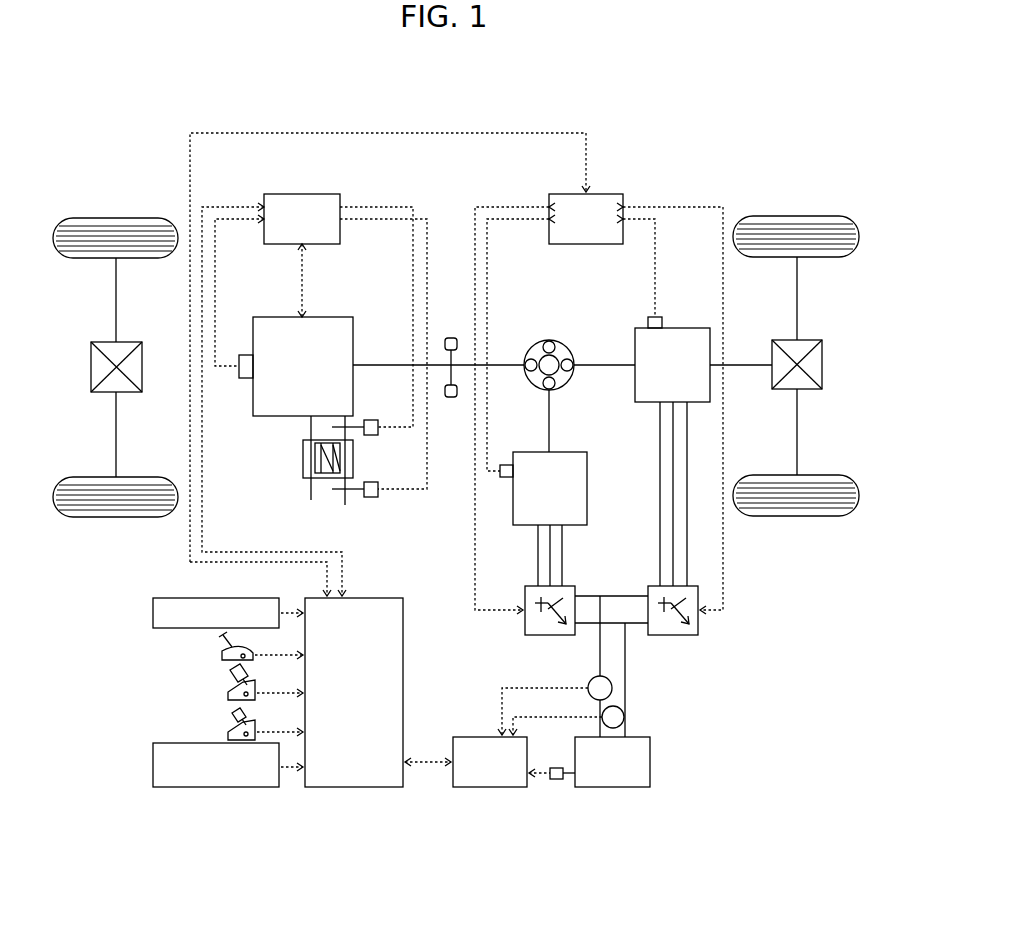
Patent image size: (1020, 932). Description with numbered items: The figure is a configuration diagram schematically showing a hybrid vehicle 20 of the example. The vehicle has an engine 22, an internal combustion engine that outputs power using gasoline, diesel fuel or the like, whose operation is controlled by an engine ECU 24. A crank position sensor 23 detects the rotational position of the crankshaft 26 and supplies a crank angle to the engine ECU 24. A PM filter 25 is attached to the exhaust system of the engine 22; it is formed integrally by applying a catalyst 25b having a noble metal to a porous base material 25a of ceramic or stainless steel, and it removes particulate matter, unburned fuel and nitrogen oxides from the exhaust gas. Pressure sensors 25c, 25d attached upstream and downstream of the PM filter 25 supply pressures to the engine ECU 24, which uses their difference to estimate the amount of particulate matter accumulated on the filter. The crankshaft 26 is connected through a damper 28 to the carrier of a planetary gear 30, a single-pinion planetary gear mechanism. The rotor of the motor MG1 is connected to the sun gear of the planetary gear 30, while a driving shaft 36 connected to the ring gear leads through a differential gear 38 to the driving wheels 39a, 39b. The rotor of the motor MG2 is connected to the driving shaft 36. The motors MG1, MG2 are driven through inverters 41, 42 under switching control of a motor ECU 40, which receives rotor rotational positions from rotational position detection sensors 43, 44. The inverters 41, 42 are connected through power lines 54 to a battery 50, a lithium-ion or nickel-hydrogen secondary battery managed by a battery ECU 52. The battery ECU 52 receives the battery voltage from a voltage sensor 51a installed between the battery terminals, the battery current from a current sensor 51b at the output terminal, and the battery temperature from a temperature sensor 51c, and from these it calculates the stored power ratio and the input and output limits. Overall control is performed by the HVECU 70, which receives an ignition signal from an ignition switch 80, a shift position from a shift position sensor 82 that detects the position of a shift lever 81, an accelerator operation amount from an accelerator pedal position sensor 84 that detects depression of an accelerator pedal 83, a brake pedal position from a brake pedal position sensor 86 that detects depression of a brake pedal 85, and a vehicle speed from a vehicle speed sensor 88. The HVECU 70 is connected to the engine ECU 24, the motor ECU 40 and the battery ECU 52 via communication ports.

The hybrid vehicle 20 is at (709, 165).
The engine 22 is at (322, 317).
The crank position sensor 23 is at (240, 355).
The engine ECU 24 is at (302, 192).
The PM filter 25 is at (295, 460).
The porous base material 25a is at (310, 458).
The catalyst 25b is at (313, 470).
The pressure sensor 25c is at (369, 420).
The pressure sensor 25d is at (372, 500).
The crankshaft 26 is at (368, 358).
The damper 28 is at (451, 338).
The planetary gear 30 is at (550, 340).
The driving shaft 36 is at (748, 358).
The differential gear 38 is at (808, 340).
The driving wheel 39a is at (797, 215).
The driving wheel 39b is at (797, 518).
The motor ECU 40 is at (598, 192).
The inverter 41 is at (567, 586).
The inverter 42 is at (690, 586).
The rotational position detection sensor 43 is at (505, 465).
The rotational position detection sensor 44 is at (650, 317).
The battery 50 is at (650, 760).
The voltage sensor 51a is at (624, 717).
The current sensor 51b is at (612, 688).
The temperature sensor 51c is at (557, 780).
The battery ECU 52 is at (470, 737).
The power lines 54 is at (600, 657).
The HVECU 70 is at (378, 598).
The ignition switch 80 is at (152, 613).
The shift lever 81 is at (221, 643).
The shift position sensor 82 is at (221, 656).
The accelerator pedal 83 is at (227, 686).
The accelerator pedal position sensor 84 is at (227, 696).
The brake pedal 85 is at (227, 725).
The brake pedal position sensor 86 is at (227, 734).
The vehicle speed sensor 88 is at (152, 762).
The motor MG1 is at (575, 452).
The motor MG2 is at (683, 328).